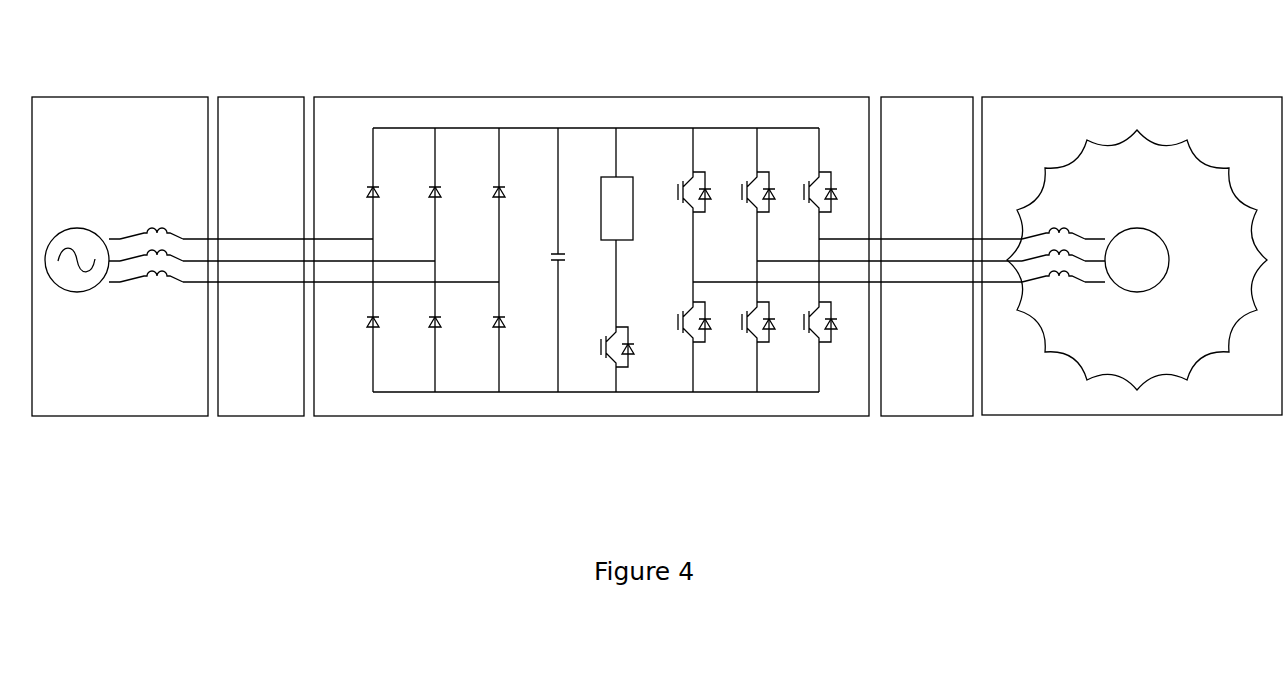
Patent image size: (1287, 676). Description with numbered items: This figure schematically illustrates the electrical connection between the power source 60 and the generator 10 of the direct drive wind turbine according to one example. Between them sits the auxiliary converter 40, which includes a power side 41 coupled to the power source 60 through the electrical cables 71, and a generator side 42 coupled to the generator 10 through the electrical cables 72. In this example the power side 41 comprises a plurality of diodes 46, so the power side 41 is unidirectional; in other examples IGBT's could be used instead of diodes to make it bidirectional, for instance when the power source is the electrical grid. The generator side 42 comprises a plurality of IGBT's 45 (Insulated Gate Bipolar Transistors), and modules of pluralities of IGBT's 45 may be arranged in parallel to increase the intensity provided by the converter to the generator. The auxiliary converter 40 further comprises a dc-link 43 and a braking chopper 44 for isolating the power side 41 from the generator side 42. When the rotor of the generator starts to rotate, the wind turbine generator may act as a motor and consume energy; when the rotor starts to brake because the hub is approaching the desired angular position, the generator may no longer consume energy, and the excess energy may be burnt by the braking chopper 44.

The generator 10 is at (1060, 97).
The auxiliary converter 40 is at (591, 260).
The power side 41 is at (436, 273).
The generator side 42 is at (746, 271).
The dc-link 43 is at (530, 446).
The braking chopper 44 is at (591, 446).
The IGBT 45 is at (757, 184).
The diode 46 is at (497, 186).
The power source 60 is at (123, 97).
The electrical cables 71 is at (252, 97).
The electrical cables 72 is at (935, 97).